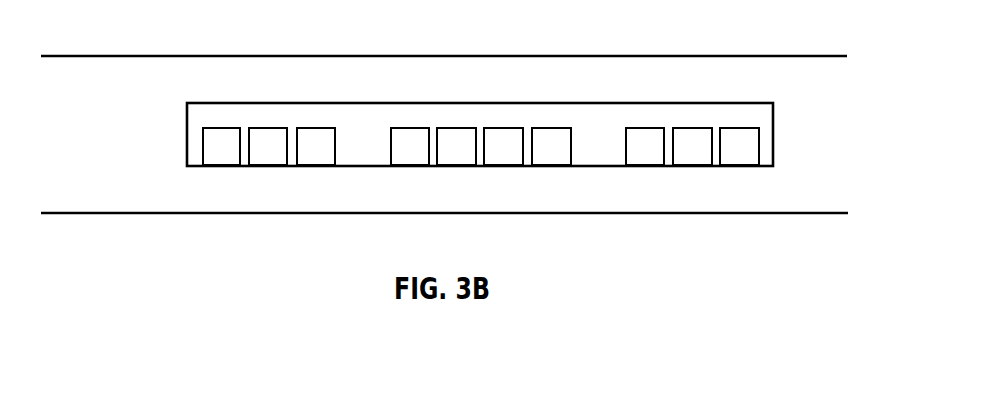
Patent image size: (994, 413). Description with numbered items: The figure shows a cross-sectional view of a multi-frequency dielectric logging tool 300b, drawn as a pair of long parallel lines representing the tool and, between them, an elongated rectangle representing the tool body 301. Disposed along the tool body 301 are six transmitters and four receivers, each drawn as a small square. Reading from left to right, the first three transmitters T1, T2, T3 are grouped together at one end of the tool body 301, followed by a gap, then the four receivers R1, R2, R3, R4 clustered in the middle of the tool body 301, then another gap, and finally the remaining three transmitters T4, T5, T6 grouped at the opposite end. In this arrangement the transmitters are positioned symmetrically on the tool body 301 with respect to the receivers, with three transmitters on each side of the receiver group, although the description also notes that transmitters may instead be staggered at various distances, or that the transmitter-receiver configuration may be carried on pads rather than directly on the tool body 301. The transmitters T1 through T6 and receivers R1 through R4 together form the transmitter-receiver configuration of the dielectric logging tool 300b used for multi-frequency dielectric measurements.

The multi-frequency dielectric logging tool 300b is at (476, 120).
The tool body 301 is at (480, 120).
The transmitter T1 is at (221, 146).
The transmitter T2 is at (268, 146).
The transmitter T3 is at (316, 146).
The transmitter T4 is at (645, 146).
The transmitter T5 is at (692, 146).
The transmitter T6 is at (739, 146).
The receiver R1 is at (410, 146).
The receiver R2 is at (456, 146).
The receiver R3 is at (503, 146).
The receiver R4 is at (551, 146).